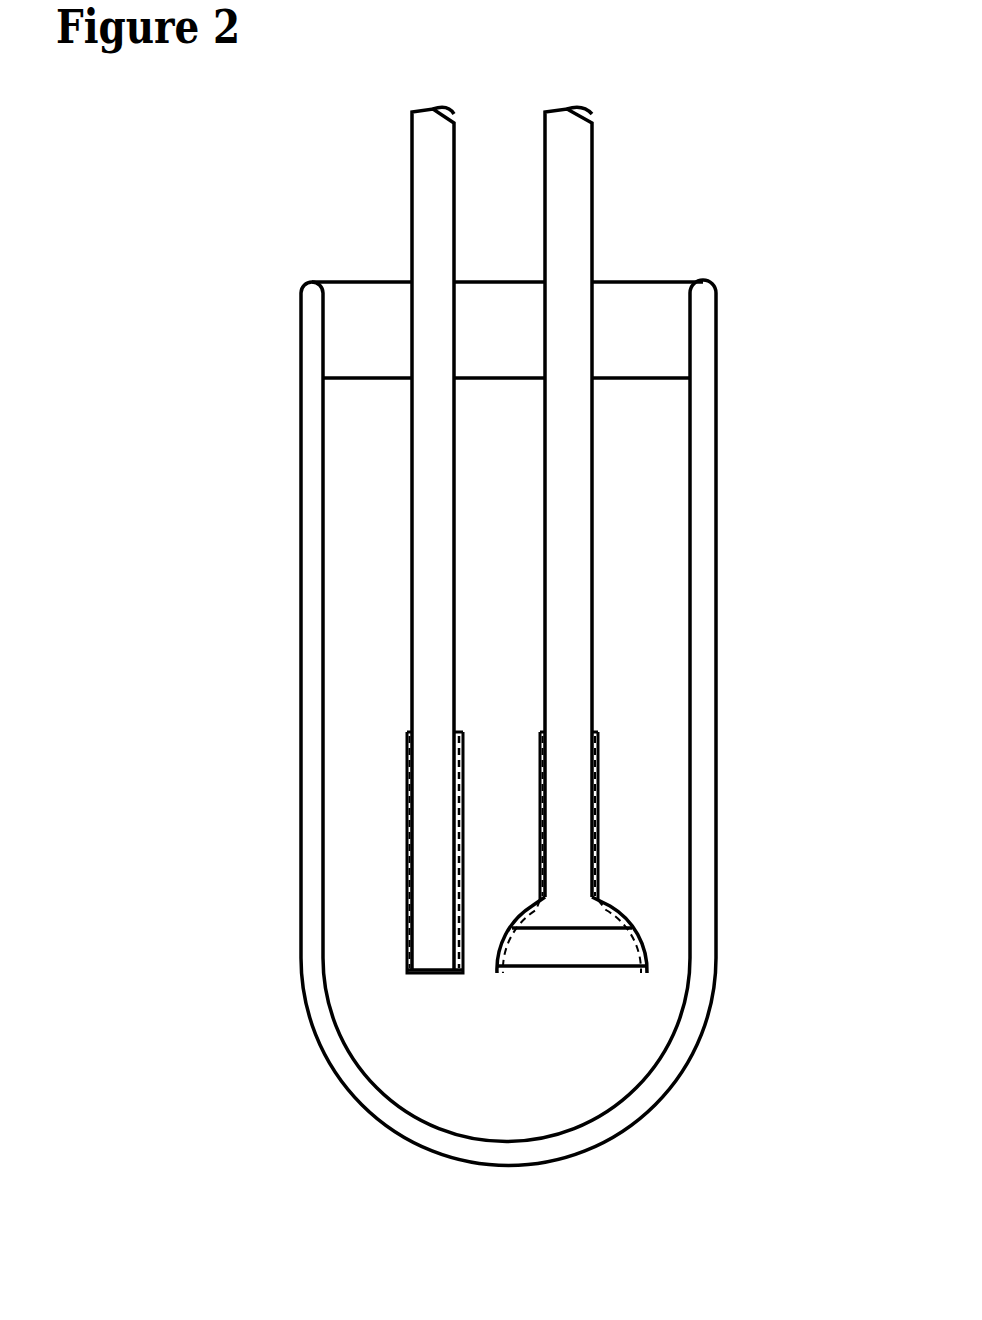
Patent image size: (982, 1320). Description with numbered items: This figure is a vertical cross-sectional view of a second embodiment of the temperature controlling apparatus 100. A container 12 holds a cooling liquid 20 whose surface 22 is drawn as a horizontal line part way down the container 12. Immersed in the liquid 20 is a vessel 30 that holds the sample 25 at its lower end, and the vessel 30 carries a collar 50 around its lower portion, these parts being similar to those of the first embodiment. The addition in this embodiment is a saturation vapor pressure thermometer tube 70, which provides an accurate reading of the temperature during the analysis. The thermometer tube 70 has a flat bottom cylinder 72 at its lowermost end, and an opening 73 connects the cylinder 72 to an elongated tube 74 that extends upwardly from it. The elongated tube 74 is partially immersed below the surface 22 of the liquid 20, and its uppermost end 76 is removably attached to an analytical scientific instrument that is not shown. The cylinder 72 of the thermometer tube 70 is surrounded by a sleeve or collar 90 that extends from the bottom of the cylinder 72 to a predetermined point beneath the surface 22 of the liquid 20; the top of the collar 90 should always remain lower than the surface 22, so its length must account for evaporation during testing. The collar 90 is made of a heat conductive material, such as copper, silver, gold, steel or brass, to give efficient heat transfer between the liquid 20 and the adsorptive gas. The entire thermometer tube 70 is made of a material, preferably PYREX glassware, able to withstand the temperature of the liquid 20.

The container 12 is at (301, 357).
The liquid 20 is at (640, 615).
The surface 22 is at (690, 378).
The sample 25 is at (573, 942).
The vessel 30 is at (567, 247).
The collar 50 is at (598, 875).
The saturation vapor pressure thermometer tube 70 is at (435, 246).
The flat bottom cylinder 72 is at (407, 875).
The opening 73 is at (407, 765).
The elongated tube 74 is at (412, 469).
The uppermost end 76 is at (412, 177).
The collar 90 is at (407, 950).
The temperature controlling apparatus 100 is at (301, 617).